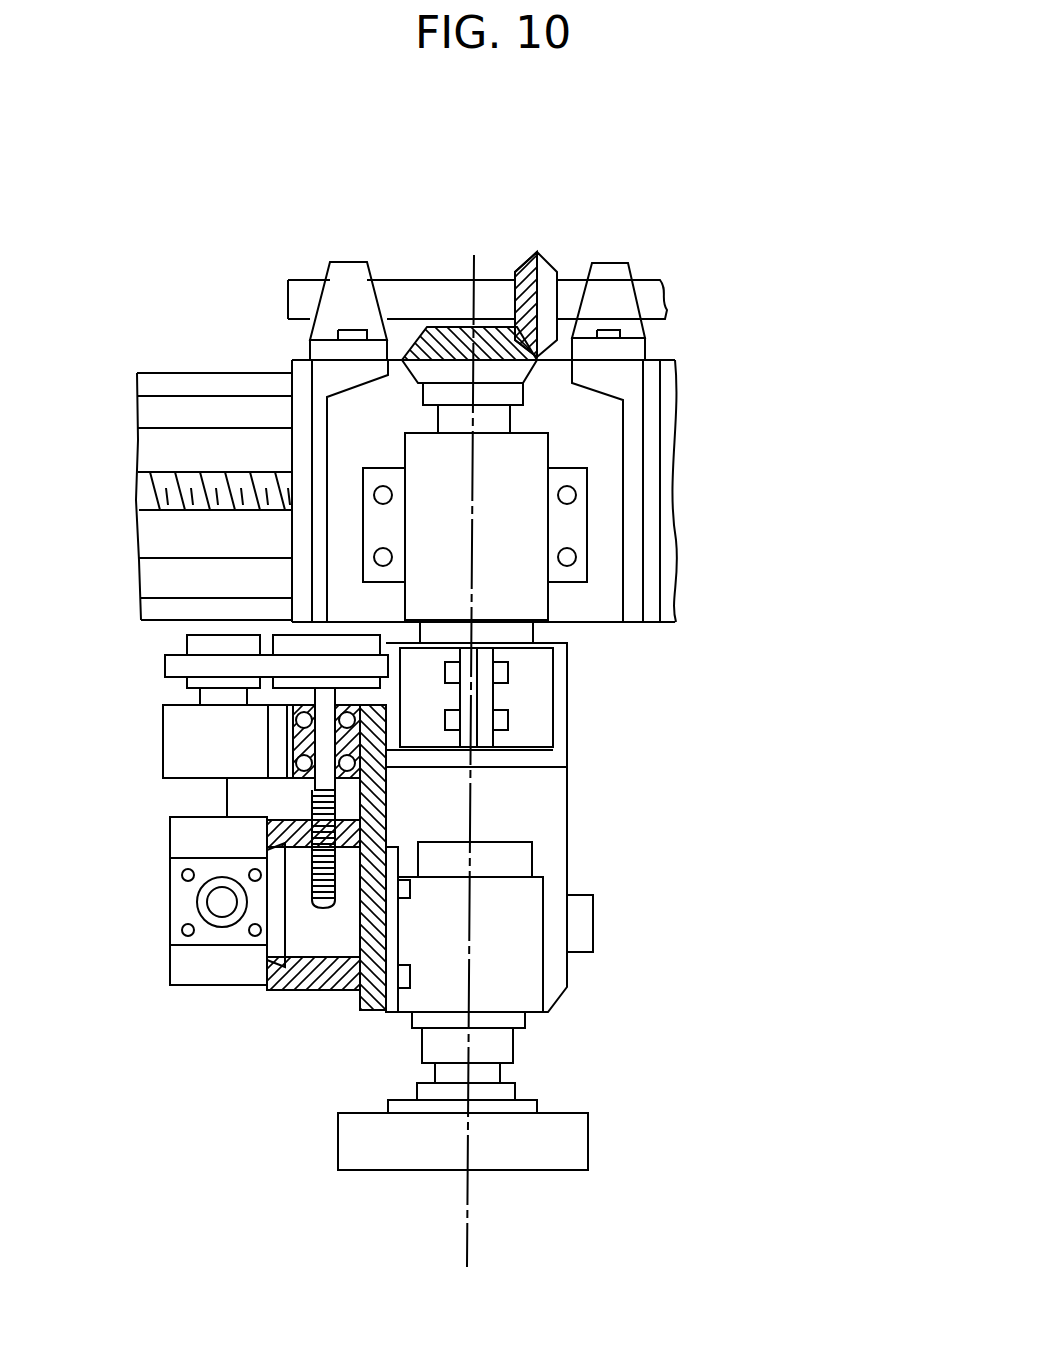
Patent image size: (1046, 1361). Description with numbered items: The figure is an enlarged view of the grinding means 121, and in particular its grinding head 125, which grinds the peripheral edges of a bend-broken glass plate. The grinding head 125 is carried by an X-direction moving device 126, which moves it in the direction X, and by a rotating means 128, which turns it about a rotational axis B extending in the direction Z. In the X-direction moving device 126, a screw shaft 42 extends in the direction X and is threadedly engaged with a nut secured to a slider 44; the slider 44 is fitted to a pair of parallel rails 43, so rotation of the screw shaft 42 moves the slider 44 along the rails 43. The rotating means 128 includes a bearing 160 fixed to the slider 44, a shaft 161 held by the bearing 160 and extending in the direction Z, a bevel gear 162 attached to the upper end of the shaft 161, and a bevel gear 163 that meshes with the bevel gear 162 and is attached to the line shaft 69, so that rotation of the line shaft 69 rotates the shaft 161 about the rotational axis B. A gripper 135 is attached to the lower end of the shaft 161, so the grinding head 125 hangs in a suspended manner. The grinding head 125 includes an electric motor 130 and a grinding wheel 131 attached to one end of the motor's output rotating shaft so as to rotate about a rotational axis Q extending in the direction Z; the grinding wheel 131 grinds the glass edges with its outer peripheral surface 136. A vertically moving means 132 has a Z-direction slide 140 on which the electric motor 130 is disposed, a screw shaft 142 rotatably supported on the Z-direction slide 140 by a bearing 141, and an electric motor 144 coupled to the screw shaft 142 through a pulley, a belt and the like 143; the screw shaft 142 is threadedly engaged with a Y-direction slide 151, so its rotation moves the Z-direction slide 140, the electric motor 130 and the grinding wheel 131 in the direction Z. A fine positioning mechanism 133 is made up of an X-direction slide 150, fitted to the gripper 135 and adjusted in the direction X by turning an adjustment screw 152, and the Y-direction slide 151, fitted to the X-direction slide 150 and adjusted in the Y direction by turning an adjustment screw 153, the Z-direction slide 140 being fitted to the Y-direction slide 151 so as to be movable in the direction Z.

The slider 44 is at (292, 360).
The rails 43 is at (162, 486).
The screw shaft 42 is at (162, 478).
The X-direction moving device 126 is at (161, 495).
The line shaft 69 is at (650, 283).
The bevel gear 163 is at (522, 262).
The bevel gear 162 is at (447, 327).
The rotating means 128 is at (516, 524).
The rotational axis B is at (470, 470).
The grinding means 121 is at (405, 884).
The bearing 160 is at (540, 593).
The grinding head 125 is at (542, 821).
The X-direction slide 150 is at (567, 790).
The gripper 135 is at (538, 715).
The shaft 161 is at (537, 630).
The electric motor 130 is at (560, 960).
The adjustment screw 152 is at (578, 895).
The grinding wheel 131 is at (385, 1136).
The outer peripheral surface 136 is at (337, 1138).
The pulley, belt and the like 143 is at (168, 663).
The electric motor 144 is at (168, 720).
The vertically moving means 132 is at (206, 752).
The bearing 141 is at (388, 809).
The fine positioning mechanism 133 is at (170, 924).
The adjustment screw 153 is at (212, 905).
The Y-direction slide 151 is at (237, 958).
The screw shaft 142 is at (276, 962).
The Z-direction slide 140 is at (370, 1000).
The Z direction Z is at (777, 865).
The X direction X is at (758, 965).
The rotational axis Q is at (462, 1208).